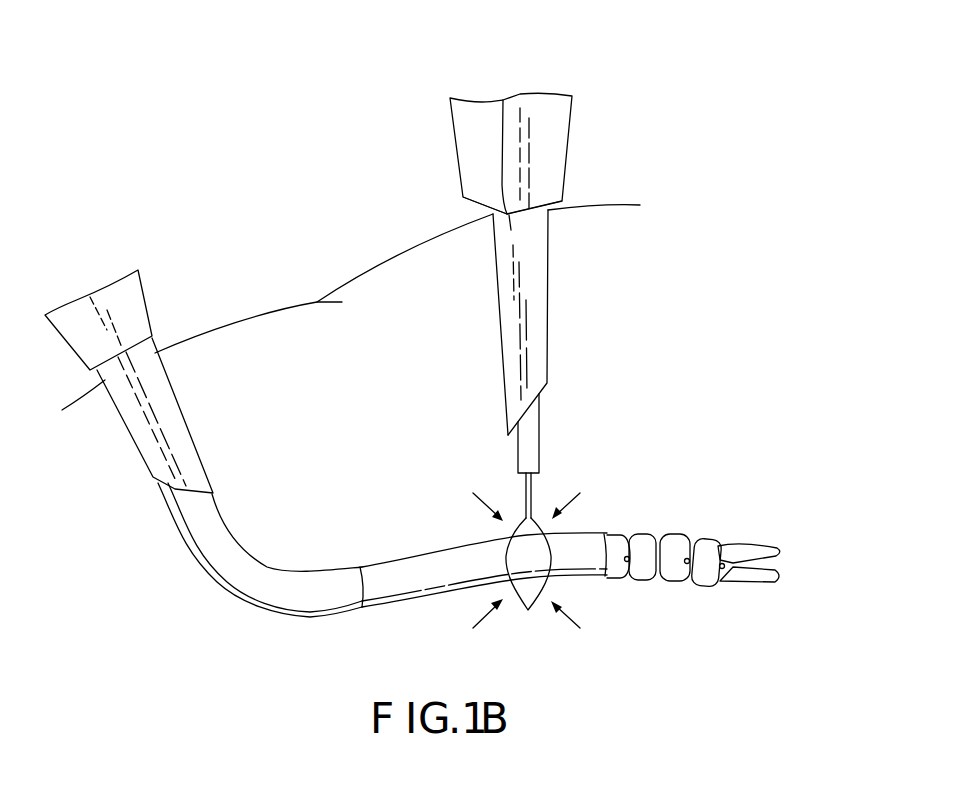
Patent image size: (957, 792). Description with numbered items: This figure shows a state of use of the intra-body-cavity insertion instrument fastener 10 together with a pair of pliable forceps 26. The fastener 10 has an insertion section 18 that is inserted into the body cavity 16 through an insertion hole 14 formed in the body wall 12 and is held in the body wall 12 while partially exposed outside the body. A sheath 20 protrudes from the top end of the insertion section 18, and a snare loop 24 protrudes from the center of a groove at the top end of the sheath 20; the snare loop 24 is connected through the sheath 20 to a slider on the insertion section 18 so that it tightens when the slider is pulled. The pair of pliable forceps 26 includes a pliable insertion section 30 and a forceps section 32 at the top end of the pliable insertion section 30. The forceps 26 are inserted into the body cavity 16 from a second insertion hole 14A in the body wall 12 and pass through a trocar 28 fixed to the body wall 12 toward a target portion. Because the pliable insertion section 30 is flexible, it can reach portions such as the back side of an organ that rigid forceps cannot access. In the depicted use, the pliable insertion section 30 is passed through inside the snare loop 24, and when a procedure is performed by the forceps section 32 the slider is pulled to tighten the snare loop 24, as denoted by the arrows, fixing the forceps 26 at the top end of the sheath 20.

The intra-body-cavity insertion instrument fastener 10 is at (523, 78).
The body wall 12 is at (273, 306).
The insertion hole 14 is at (481, 214).
The insertion hole 14A is at (165, 344).
The body cavity 16 is at (303, 395).
The insertion section 18 is at (548, 296).
The sheath 20 is at (540, 435).
The snare loop 24 is at (531, 610).
The pair of pliable forceps 26 is at (372, 612).
The trocar 28 is at (205, 460).
The pliable insertion section 30 is at (375, 562).
The forceps section 32 is at (747, 588).